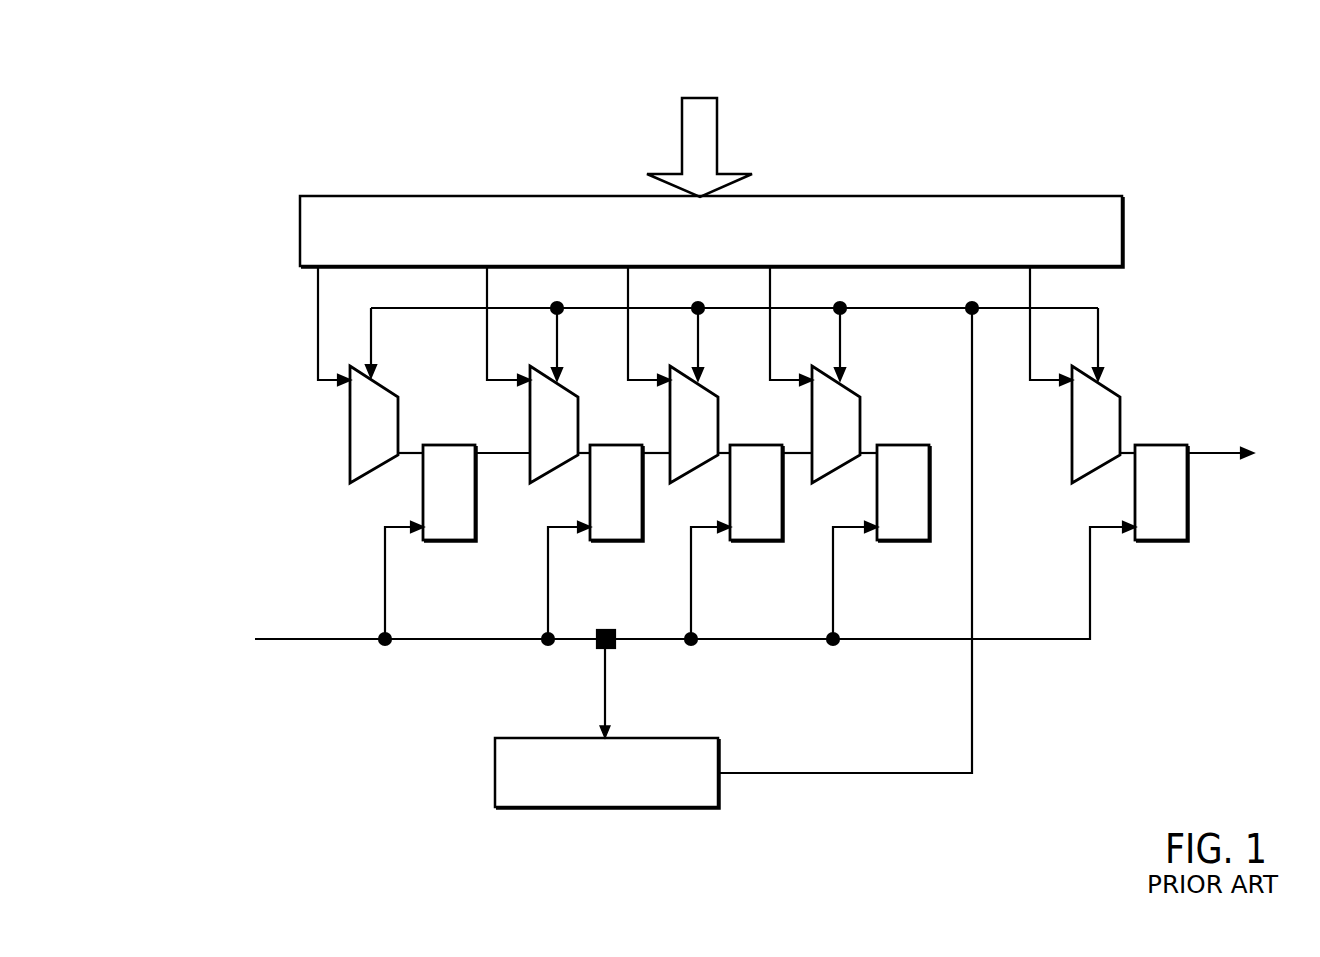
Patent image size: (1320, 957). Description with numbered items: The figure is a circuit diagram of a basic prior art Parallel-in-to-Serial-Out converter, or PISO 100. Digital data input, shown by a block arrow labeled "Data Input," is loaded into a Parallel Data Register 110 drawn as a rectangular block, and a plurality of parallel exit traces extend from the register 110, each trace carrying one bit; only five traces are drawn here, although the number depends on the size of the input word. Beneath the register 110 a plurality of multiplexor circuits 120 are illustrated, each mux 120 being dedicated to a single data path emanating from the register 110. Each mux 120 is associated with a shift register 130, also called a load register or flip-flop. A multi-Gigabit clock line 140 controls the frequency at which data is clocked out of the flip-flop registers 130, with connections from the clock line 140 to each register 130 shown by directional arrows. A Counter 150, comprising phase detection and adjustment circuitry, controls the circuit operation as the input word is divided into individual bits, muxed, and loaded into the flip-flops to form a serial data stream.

The Parallel-in-to-Serial-Out (PISO) converter 100 is at (170, 277).
The Parallel Data Register 110 is at (1040, 238).
The multiplexor (mux) circuit 120 is at (393, 442).
The shift register 130 is at (470, 509).
The multi-Gigabit clock line 140 is at (287, 637).
The Counter 150 is at (611, 810).